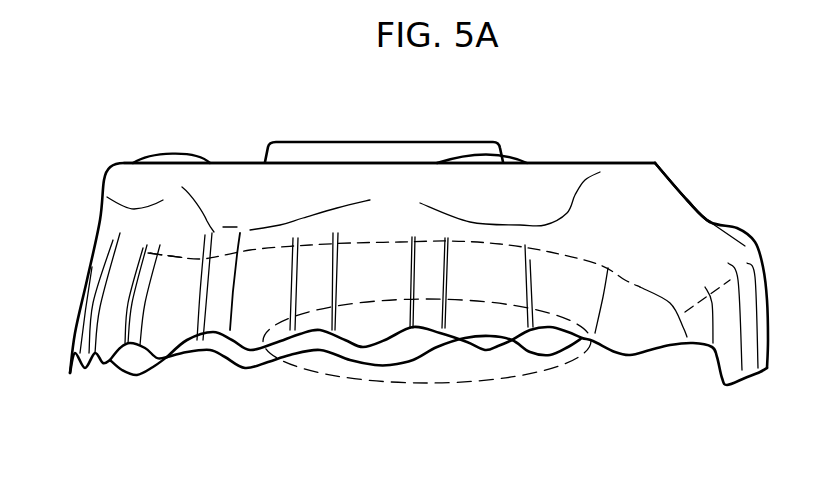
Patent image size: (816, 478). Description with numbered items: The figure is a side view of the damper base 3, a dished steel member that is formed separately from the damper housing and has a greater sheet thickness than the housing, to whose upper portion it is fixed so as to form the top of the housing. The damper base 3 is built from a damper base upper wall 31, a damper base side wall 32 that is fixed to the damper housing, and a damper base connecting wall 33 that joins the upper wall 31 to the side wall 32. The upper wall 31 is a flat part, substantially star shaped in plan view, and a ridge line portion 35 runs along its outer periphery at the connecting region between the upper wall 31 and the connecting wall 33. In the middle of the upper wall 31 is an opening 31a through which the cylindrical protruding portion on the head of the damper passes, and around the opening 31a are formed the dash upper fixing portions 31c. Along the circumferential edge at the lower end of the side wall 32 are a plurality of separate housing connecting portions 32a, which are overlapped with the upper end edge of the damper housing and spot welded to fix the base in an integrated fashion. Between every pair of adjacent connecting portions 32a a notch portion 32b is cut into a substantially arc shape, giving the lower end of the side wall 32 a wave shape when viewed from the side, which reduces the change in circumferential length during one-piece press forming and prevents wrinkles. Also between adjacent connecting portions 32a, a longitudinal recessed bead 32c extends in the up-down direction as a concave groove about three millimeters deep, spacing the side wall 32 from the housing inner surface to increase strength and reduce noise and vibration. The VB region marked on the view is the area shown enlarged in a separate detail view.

The damper base 3 is at (715, 167).
The damper base upper wall 31 is at (597, 161).
The opening 31a is at (300, 142).
The dash upper fixing portion 31c is at (159, 153).
The damper base side wall 32 is at (74, 333).
The housing connecting portion 32a is at (490, 325).
The notch portion 32b is at (213, 351).
The longitudinal bead 32c is at (210, 295).
The damper base connecting wall 33 is at (107, 198).
The ridge line portion 35 is at (657, 163).
The VB region VB is at (522, 380).